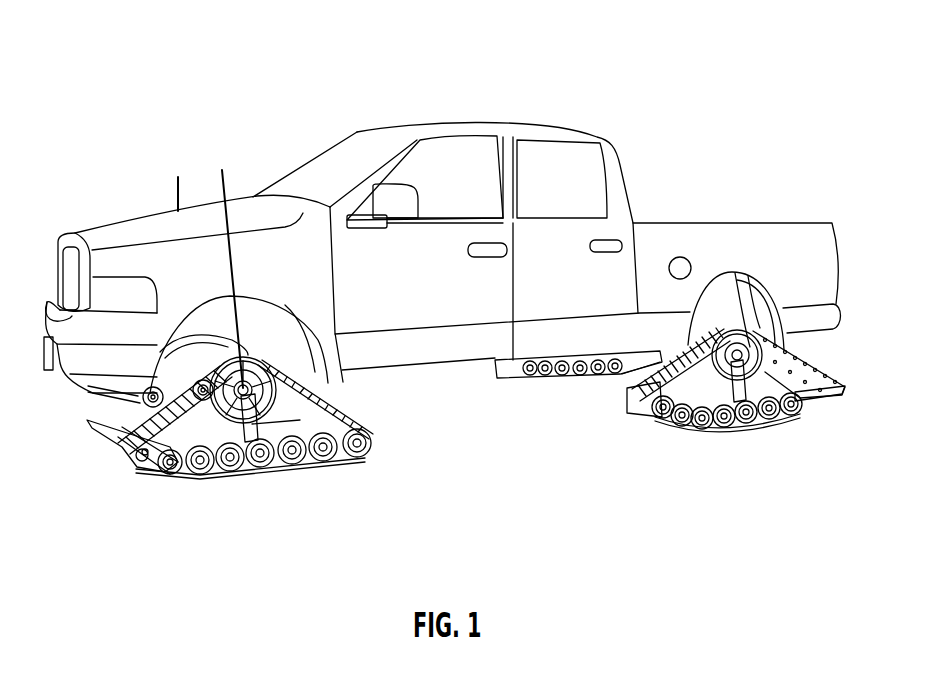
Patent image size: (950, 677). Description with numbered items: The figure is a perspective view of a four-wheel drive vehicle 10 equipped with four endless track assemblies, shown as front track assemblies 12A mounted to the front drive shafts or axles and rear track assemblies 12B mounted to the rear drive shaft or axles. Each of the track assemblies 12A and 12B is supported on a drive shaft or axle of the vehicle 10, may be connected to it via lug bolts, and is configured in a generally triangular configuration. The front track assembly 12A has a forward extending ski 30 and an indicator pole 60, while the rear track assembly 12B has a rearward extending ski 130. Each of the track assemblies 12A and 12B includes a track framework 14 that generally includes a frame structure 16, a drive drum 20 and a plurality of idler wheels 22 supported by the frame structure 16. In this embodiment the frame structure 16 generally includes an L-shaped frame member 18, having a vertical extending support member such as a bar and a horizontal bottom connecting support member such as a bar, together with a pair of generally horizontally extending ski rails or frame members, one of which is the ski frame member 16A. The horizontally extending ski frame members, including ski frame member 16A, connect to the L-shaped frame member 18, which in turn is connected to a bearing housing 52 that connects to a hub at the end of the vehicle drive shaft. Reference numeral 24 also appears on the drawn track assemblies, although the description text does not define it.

The four-wheel drive vehicle 10 is at (514, 70).
The front track assembly 12A is at (89, 404).
The rear track assembly 12B is at (624, 423).
The track framework 14 is at (142, 392).
The frame structure 16 is at (333, 393).
The ski frame member 16A is at (243, 447).
The L-shaped frame member 18 is at (293, 467).
The drive drum 20 is at (190, 468).
The idler wheels 22 is at (333, 465).
The drive sprocket 24 is at (199, 362).
The ski 30 is at (101, 444).
The bearing housing 52 is at (339, 368).
The indicator pole 60 is at (176, 188).
The ski 130 is at (645, 346).